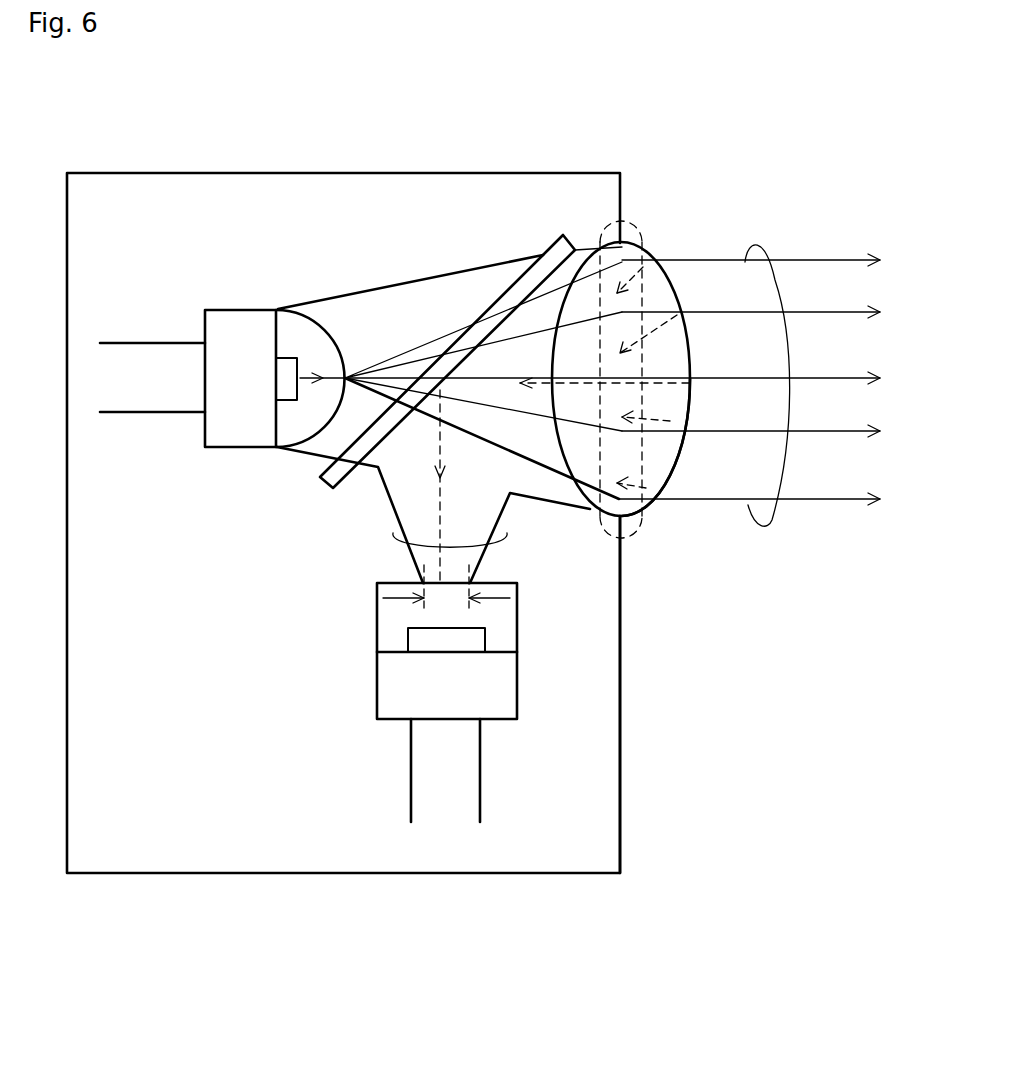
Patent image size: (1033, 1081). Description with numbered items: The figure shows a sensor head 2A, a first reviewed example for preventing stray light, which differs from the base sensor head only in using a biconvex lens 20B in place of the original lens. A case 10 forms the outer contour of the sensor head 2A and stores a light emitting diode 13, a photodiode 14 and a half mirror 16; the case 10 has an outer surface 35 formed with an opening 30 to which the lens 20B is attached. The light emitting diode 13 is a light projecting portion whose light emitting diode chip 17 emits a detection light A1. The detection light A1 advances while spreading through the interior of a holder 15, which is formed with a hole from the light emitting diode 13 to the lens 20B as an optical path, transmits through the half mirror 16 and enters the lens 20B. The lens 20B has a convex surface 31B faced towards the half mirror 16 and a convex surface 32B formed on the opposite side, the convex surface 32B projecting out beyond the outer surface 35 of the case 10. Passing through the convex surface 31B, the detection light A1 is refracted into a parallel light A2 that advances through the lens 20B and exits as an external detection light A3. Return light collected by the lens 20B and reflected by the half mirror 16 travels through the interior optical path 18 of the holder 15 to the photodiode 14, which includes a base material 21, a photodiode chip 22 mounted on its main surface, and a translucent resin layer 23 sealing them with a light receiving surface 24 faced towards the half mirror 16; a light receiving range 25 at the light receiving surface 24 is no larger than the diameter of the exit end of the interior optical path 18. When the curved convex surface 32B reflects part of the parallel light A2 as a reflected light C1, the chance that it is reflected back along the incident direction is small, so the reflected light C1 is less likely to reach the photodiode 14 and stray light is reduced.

The sensor head 2A is at (618, 143).
The case 10 is at (412, 173).
The light emitting diode 13 is at (264, 297).
The photodiode 14 is at (530, 667).
The holder 15 is at (420, 280).
The half mirror 16 is at (543, 252).
The light emitting diode chip 17 is at (287, 357).
The interior optical path 18 is at (473, 552).
The lens 20B is at (657, 293).
The base material 21 is at (498, 693).
The photodiode chip 22 is at (447, 642).
The translucent resin layer 23 is at (393, 637).
The light receiving surface 24 is at (395, 582).
The light receiving range 25 is at (447, 598).
The opening 30 is at (640, 518).
The convex surface 31B is at (598, 513).
The convex surface 32B is at (676, 455).
The outer surface 35 is at (620, 813).
The detection light A1 is at (366, 405).
The parallel light A2 is at (632, 260).
The external detection light A3 is at (767, 523).
The reflected light C1 is at (443, 515).